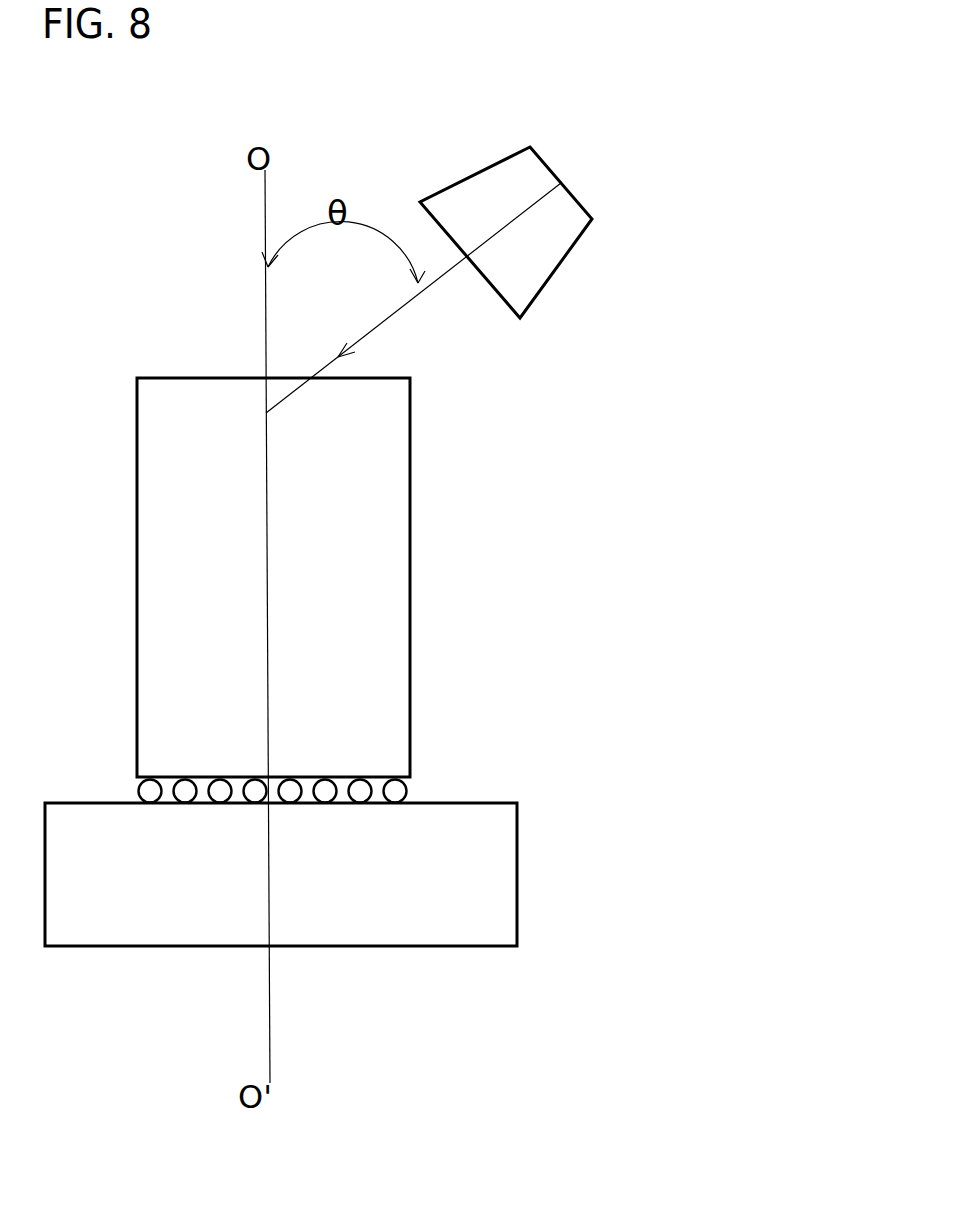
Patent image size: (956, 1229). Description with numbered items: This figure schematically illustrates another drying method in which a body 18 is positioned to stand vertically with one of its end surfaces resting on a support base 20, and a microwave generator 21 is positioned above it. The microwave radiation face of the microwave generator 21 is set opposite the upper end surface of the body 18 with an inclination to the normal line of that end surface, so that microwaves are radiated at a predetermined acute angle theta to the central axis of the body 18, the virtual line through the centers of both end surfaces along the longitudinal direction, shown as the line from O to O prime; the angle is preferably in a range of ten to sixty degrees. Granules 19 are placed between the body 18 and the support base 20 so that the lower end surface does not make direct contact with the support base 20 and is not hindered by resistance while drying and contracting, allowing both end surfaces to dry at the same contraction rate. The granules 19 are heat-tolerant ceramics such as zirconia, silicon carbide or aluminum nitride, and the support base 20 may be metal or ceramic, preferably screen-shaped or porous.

The body 18 is at (386, 580).
The granules 19 is at (415, 777).
The support base 20 is at (452, 910).
The microwave generator 21 is at (497, 243).